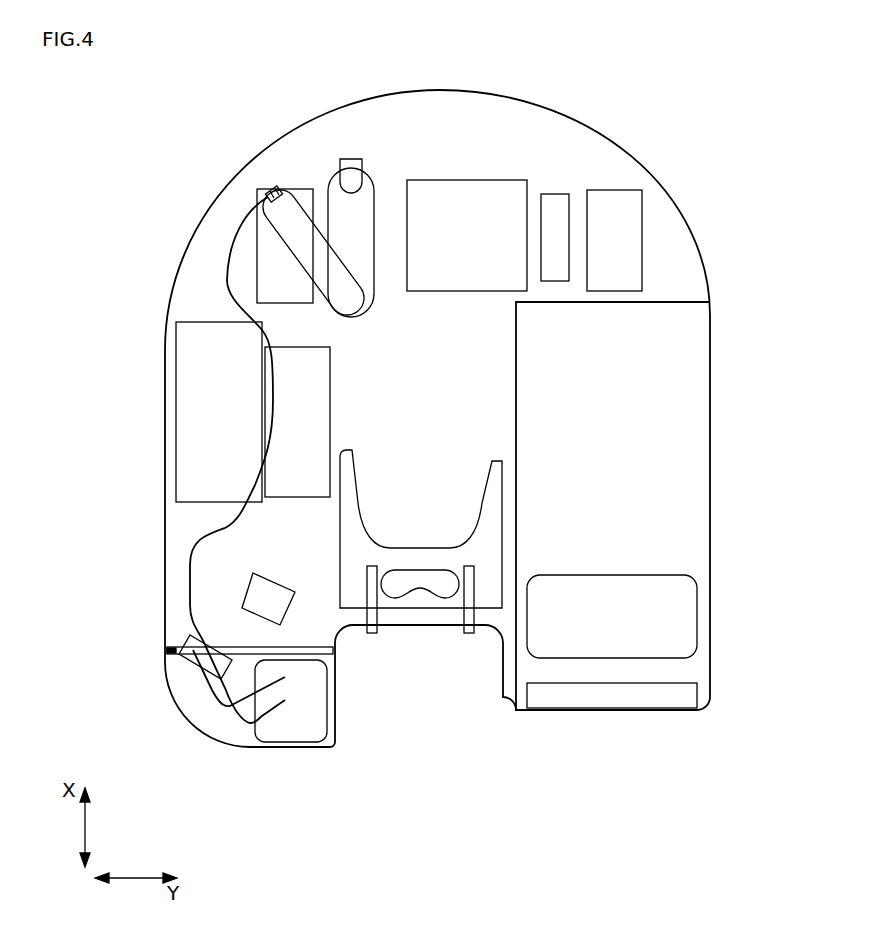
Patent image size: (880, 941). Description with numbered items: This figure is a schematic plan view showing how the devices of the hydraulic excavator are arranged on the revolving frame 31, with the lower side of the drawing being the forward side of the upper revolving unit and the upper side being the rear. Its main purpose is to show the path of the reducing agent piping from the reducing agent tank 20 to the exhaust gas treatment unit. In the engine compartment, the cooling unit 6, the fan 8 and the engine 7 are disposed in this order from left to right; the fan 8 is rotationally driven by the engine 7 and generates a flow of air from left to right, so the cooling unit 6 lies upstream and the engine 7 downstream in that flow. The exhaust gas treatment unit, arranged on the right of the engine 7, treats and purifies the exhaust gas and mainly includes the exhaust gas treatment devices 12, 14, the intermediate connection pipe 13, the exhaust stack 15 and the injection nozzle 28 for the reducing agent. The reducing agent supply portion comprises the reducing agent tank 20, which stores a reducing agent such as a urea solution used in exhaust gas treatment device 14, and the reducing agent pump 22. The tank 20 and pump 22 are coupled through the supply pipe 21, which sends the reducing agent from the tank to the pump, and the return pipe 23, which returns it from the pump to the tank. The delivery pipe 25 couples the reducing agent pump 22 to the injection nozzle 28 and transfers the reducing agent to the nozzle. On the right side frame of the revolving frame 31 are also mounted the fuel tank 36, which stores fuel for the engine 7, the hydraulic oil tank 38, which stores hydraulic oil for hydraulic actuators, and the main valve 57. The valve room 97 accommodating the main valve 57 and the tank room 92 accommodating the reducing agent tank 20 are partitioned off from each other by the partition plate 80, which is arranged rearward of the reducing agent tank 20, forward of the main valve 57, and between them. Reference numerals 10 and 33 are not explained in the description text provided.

The cooling unit 6 is at (613, 213).
The engine 7 is at (462, 198).
The fan 8 is at (557, 210).
The battery unit 10 is at (695, 410).
The exhaust gas treatment device 12 is at (272, 250).
The intermediate connection pipe 13 is at (297, 217).
The exhaust gas treatment device 14 is at (363, 213).
The exhaust stack 15 is at (350, 173).
The reducing agent tank 20 is at (291, 728).
The supply pipe 21 is at (215, 690).
The reducing agent pump 22 is at (205, 658).
The return pipe 23 is at (230, 717).
The delivery pipe 25 is at (225, 277).
The injection nozzle 28 is at (270, 190).
The revolving frame 31 is at (432, 510).
The clamp 33 is at (408, 558).
The fuel tank 36 is at (195, 385).
The hydraulic oil tank 38 is at (300, 425).
The main valve 57 is at (268, 598).
The partition plate 80 is at (167, 652).
The tank room 92 is at (238, 732).
The valve room 97 is at (195, 520).